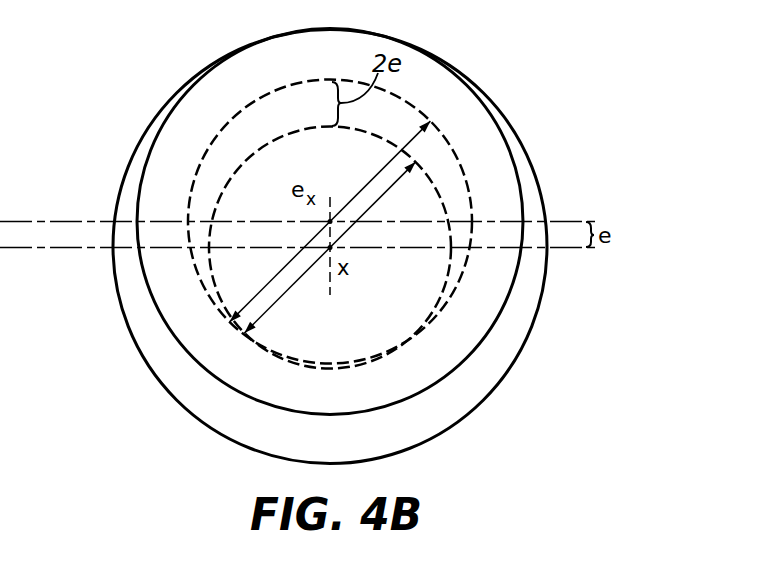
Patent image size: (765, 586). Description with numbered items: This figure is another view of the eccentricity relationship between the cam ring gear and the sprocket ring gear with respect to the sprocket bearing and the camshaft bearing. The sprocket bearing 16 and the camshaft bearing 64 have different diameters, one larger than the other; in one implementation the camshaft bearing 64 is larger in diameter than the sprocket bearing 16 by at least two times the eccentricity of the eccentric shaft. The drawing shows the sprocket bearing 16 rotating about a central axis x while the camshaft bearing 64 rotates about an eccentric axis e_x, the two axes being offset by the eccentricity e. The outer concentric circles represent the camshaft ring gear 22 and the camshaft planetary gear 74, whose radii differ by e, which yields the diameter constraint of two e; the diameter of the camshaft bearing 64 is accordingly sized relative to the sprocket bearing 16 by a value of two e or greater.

The camshaft ring gear 22 is at (497, 387).
The camshaft planetary gear 74 is at (494, 340).
The camshaft bearing 64 is at (462, 158).
The sprocket bearing 16 is at (430, 318).